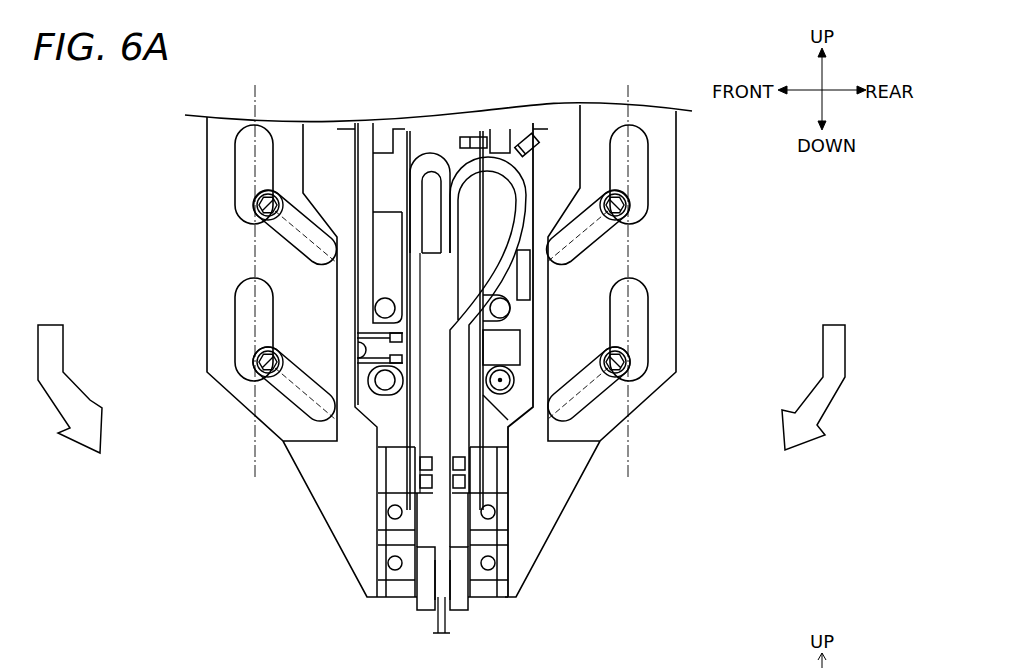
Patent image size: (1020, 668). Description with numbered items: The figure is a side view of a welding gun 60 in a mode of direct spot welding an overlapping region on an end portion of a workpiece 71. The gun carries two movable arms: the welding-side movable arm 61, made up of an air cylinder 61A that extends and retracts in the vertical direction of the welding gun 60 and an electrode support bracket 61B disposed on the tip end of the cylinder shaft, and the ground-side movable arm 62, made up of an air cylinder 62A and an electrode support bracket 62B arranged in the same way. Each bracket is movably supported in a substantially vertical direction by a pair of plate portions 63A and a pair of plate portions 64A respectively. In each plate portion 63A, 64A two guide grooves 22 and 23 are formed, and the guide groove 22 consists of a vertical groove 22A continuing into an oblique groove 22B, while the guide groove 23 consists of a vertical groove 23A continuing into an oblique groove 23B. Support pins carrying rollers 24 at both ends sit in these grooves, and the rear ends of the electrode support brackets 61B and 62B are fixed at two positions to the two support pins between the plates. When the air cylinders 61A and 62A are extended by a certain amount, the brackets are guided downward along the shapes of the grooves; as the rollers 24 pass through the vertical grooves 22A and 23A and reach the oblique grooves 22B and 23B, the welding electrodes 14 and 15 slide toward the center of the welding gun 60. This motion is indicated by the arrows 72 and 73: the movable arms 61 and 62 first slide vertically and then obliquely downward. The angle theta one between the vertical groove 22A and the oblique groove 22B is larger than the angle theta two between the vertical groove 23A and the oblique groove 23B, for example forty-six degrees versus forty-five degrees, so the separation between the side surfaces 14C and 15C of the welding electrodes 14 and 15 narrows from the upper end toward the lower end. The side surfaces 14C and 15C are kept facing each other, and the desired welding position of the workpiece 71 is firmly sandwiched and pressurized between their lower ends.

The welding gun 60 is at (435, 53).
The pair of plate portions 63A is at (222, 140).
The pair of plate portions 64A is at (660, 140).
The guide groove 22 is at (128, 136).
The vertical groove 22A is at (249, 180).
The oblique groove 22B is at (285, 236).
The guide groove 23 is at (128, 290).
The vertical groove 23A is at (249, 332).
The oblique groove 23B is at (285, 390).
The roller 24 is at (442, 224).
The movable arm 61 is at (210, 481).
The air cylinder 61A is at (393, 187).
The electrode support bracket 61B is at (345, 507).
The movable arm 62 is at (673, 481).
The air cylinder 62A is at (488, 187).
The electrode support bracket 62B is at (540, 507).
The welding electrode 14 is at (415, 603).
The side surface 14C is at (437, 557).
The welding electrode 15 is at (470, 603).
The side surface 15C is at (447, 563).
The workpiece 71 is at (445, 623).
The arrow 72 is at (65, 398).
The arrow 73 is at (818, 400).